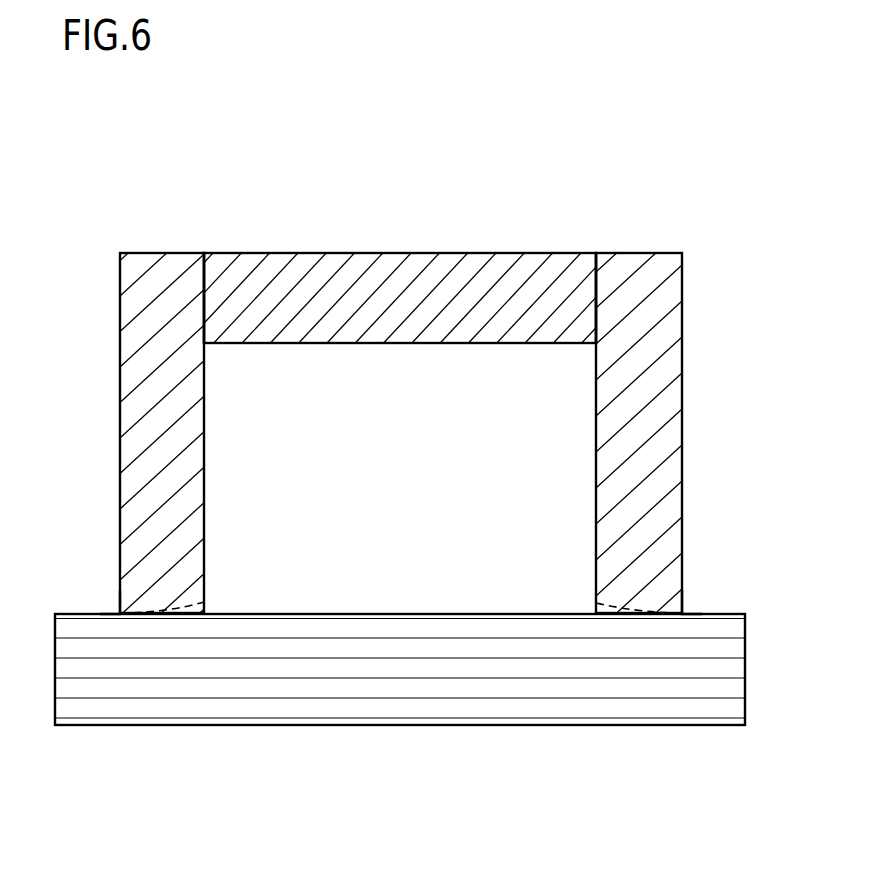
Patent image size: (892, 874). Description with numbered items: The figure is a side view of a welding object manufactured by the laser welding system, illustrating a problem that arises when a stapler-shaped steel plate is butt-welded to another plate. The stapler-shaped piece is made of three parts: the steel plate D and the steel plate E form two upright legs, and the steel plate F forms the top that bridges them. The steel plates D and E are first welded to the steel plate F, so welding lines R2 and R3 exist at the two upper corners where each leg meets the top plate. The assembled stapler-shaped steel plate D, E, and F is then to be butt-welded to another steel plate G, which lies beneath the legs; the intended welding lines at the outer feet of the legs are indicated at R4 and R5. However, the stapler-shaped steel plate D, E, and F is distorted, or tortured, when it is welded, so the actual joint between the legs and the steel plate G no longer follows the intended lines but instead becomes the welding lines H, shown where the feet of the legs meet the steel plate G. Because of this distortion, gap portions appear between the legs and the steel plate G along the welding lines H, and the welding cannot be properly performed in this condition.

The steel plate D is at (120, 421).
The steel plate E is at (682, 429).
The steel plate F is at (396, 254).
The steel plate G is at (400, 725).
The welding lines H is at (596, 606).
The welding line R2 is at (204, 254).
The welding line R3 is at (596, 255).
The corner radius at outer base of left side wall R4 is at (120, 613).
The welding line R5 is at (682, 613).